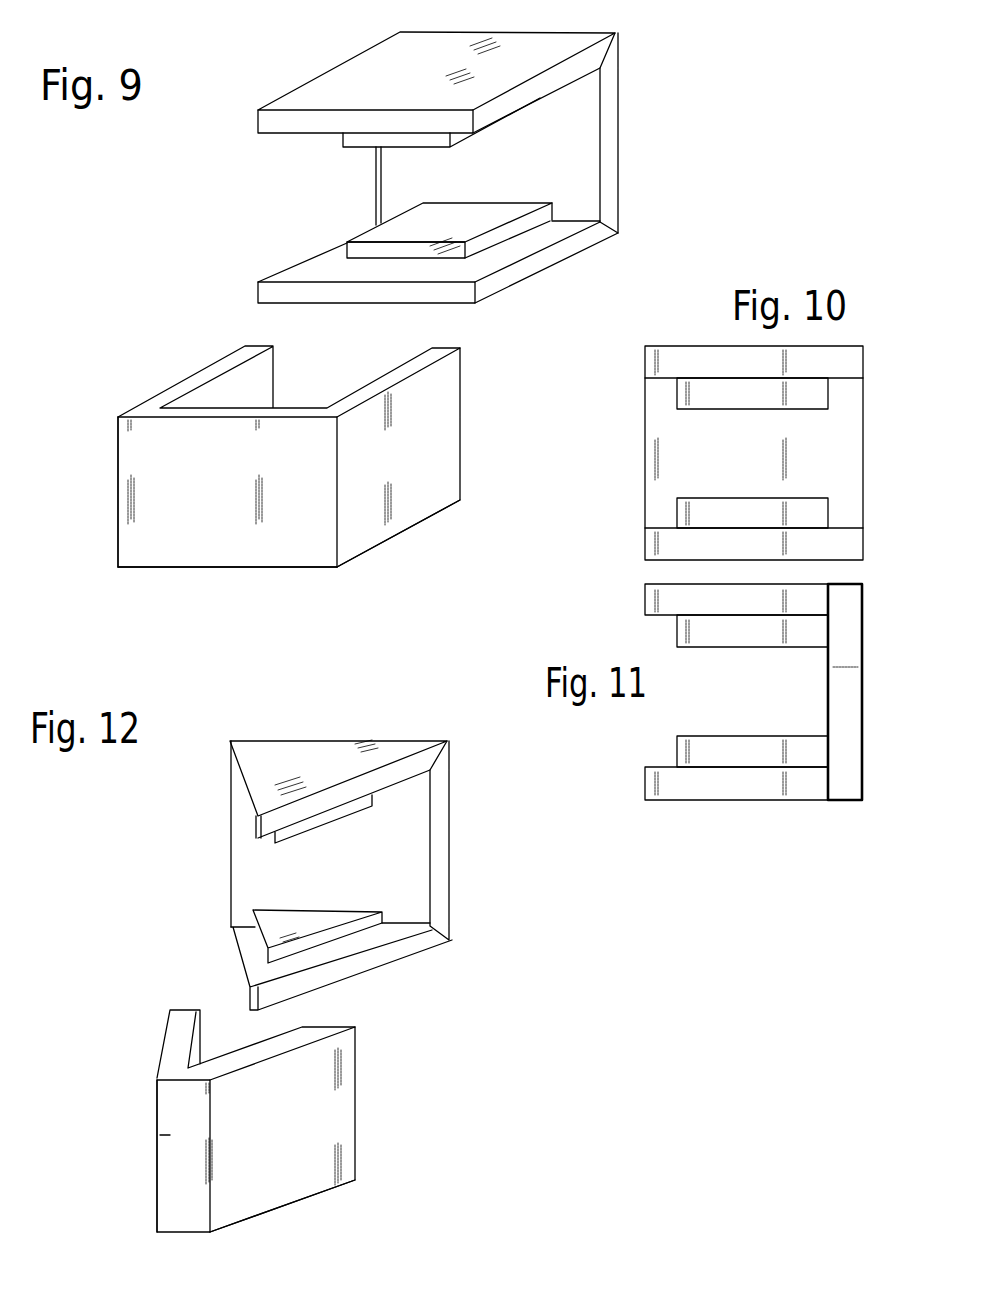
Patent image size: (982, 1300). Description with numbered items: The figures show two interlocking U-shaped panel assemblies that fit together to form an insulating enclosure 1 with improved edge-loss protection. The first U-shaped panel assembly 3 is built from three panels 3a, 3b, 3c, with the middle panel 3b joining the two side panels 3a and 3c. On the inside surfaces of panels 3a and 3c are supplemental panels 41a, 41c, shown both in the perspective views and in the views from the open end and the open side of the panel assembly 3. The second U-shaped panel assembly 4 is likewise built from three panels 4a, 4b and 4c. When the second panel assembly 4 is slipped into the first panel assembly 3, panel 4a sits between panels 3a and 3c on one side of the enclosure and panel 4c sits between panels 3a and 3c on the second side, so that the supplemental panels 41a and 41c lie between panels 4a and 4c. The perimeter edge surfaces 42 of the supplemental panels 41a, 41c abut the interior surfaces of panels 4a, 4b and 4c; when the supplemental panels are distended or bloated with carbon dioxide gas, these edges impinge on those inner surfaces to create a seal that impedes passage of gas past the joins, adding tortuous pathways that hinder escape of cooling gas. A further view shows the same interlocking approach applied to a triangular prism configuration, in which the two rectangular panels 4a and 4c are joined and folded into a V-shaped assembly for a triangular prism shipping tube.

In FIG. 9, the insulating enclosure 1 is at (160, 288).
In FIG. 12, the insulating enclosure 1 is at (115, 915).
In FIG. 9, the first U-shaped panel assembly 3 is at (280, 78).
In FIG. 12, the first U-shaped panel assembly 3 is at (203, 852).
In FIG. 9, the panel 3a is at (603, 244).
In FIG. 10, the panel 3a is at (863, 555).
In FIG. 11, the panel 3a is at (645, 782).
In FIG. 12, the panel 3a is at (432, 950).
In FIG. 9, the panel 3b is at (613, 158).
In FIG. 10, the panel 3b is at (863, 438).
In FIG. 11, the panel 3b is at (845, 692).
In FIG. 12, the panel 3b is at (452, 865).
In FIG. 9, the panel 3c is at (563, 87).
In FIG. 10, the panel 3c is at (862, 374).
In FIG. 11, the panel 3c is at (645, 604).
In FIG. 12, the panel 3c is at (383, 794).
In FIG. 9, the supplemental panel 41a is at (542, 226).
In FIG. 10, the supplemental panel 41a is at (828, 515).
In FIG. 11, the supplemental panel 41a is at (677, 743).
In FIG. 12, the supplemental panel 41a is at (317, 936).
In FIG. 9, the supplemental panel 41c is at (343, 139).
In FIG. 10, the supplemental panel 41c is at (828, 410).
In FIG. 11, the supplemental panel 41c is at (677, 633).
In FIG. 12, the supplemental panel 41c is at (323, 819).
In FIG. 9, the perimeter edge surface 42 is at (364, 148).
In FIG. 10, the perimeter edge surface 42 is at (722, 406).
In FIG. 11, the perimeter edge surface 42 is at (722, 643).
In FIG. 9, the second U-shaped panel assembly 4 is at (102, 450).
In FIG. 12, the second U-shaped panel assembly 4 is at (148, 1125).
In FIG. 9, the panel 4a is at (118, 528).
In FIG. 12, the panel 4a is at (157, 1191).
In FIG. 9, the panel 4b is at (178, 567).
In FIG. 9, the panel 4c is at (365, 548).
In FIG. 12, the panel 4c is at (297, 1203).